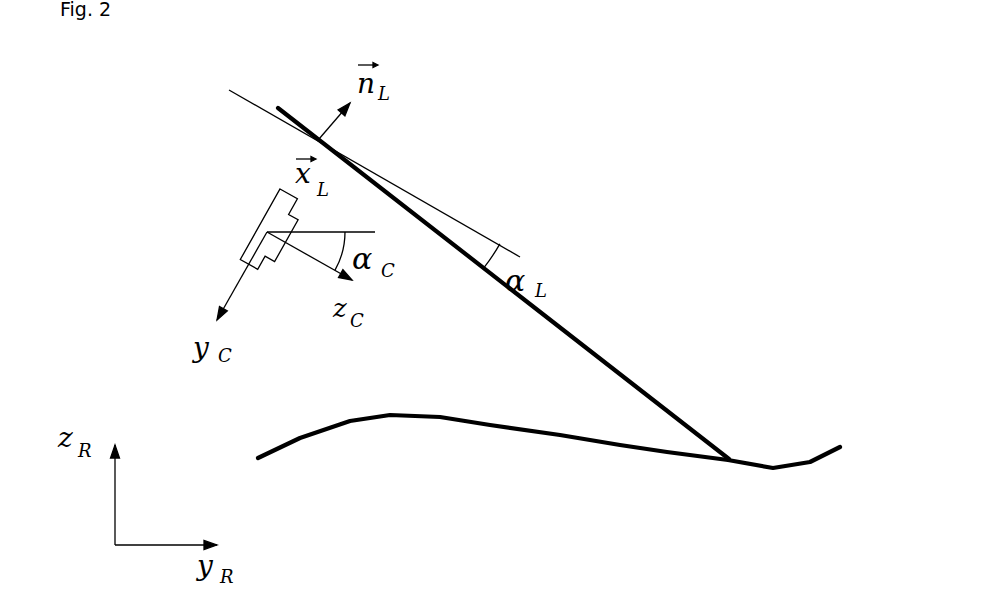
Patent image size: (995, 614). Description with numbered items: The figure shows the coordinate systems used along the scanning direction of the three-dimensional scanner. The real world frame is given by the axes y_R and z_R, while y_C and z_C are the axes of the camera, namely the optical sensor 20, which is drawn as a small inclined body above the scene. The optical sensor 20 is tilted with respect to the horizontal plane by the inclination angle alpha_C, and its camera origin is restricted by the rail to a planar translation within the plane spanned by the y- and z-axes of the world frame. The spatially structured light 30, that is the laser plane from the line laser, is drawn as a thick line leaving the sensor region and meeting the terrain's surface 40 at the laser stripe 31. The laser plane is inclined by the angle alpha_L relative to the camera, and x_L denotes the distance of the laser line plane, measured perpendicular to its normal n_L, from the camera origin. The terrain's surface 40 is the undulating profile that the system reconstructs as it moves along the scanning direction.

The optical sensor 20 is at (276, 217).
The spatially structured light 30 is at (572, 330).
The laser stripe 31 is at (730, 458).
The terrain's surface 40 is at (487, 425).